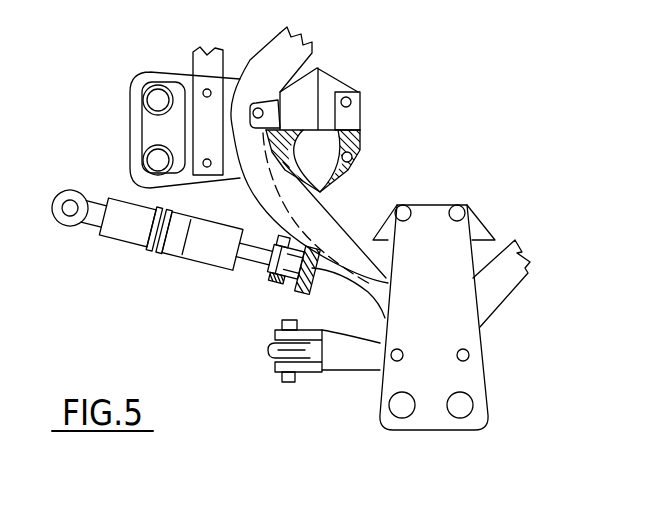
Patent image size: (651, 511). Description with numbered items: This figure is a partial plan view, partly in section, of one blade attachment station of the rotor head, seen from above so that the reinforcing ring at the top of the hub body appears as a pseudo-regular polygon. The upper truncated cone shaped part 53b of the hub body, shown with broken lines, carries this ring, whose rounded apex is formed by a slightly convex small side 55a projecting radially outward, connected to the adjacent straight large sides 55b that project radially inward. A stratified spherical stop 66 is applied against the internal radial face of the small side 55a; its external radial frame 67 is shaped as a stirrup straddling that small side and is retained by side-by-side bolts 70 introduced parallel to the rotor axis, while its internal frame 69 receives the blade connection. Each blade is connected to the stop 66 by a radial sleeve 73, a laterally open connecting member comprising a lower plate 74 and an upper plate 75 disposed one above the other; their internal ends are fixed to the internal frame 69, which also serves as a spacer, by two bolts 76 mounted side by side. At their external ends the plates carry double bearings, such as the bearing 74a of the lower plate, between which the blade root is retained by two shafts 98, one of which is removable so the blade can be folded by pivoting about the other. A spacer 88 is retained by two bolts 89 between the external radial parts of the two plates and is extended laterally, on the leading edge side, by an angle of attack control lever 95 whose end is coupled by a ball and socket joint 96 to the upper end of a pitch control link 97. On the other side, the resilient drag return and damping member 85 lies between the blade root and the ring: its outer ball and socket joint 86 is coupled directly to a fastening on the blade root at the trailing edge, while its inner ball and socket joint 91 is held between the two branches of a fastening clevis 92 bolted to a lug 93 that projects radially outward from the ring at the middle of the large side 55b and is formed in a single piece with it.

The upper truncated cone shaped part 53b is at (350, 277).
The small convex side 55a is at (240, 108).
The large rectilinear side 55b is at (330, 238).
The stratified spherical stop 66 is at (365, 95).
The external radial frame 67 is at (352, 160).
The internal frame 69 is at (363, 130).
The bolt 70 is at (263, 113).
The radial sleeve 73 is at (174, 64).
The lower plate 74 is at (128, 137).
The double bearing 74a is at (145, 120).
The upper plate 75 is at (473, 377).
The bolt 76 is at (350, 90).
The resilient drag return and damping member 85 is at (148, 270).
The ball and socket joint 86 is at (55, 227).
The spacer 88 is at (213, 185).
The bolt 89 is at (207, 89).
The ball and socket joint 91 is at (243, 268).
The fastening clevis 92 is at (280, 278).
The lug 93 is at (305, 297).
The angle of attack control lever 95 is at (352, 360).
The ball and socket joint 96 is at (288, 375).
The link 97 is at (267, 352).
The shaft 98 is at (153, 162).